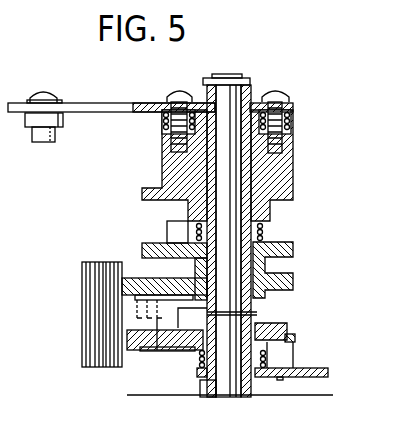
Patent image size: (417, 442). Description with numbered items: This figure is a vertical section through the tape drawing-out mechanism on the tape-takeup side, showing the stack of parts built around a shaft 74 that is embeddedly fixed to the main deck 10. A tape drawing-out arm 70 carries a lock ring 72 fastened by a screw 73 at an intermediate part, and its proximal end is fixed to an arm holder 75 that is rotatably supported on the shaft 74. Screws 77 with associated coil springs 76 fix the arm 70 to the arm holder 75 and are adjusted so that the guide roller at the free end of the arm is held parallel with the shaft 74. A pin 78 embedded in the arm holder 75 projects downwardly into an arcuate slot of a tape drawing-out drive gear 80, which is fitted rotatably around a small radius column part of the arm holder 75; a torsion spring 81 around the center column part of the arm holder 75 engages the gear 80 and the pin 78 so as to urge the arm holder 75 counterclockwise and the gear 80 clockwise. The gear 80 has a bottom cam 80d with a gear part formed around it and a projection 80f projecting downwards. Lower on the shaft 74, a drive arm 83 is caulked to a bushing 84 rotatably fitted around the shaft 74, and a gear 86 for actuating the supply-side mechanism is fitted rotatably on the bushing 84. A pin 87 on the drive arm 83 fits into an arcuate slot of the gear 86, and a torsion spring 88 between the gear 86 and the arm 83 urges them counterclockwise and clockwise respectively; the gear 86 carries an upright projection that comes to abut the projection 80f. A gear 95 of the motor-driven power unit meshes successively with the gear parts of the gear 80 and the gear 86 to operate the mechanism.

The main deck 10 is at (300, 393).
The tape drawing-out arm 70 is at (115, 103).
The lock ring 72 is at (64, 117).
The screw 73 is at (47, 90).
The shaft 74 is at (233, 75).
The arm holder 75 is at (293, 158).
The coil springs 76 is at (291, 119).
The screws 77 is at (180, 92).
The pin 78 is at (167, 226).
The tape drawing-out drive gear 80 is at (142, 250).
The bottom cam 80d is at (122, 287).
The projection 80f is at (157, 335).
The torsion spring 81 is at (265, 231).
The drive arm 83 is at (330, 374).
The bushing 84 is at (207, 385).
The gear 86 is at (128, 340).
The pin 87 is at (285, 355).
The torsion spring 88 is at (295, 338).
The gear 95 is at (100, 367).